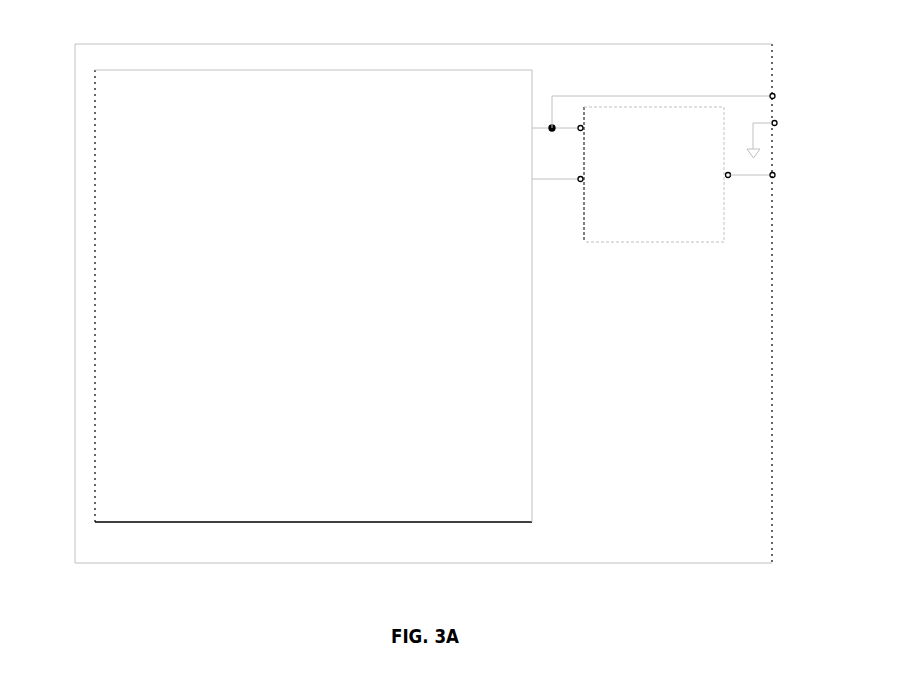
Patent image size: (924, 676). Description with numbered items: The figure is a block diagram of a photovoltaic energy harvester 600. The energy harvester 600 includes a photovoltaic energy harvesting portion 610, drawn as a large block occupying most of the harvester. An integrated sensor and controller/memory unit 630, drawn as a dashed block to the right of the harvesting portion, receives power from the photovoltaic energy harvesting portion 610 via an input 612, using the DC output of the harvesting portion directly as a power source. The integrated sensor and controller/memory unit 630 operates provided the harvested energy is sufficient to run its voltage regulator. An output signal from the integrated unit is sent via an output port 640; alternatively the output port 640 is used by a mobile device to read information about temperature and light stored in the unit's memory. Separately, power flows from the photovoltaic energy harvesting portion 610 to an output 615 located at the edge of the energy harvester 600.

The energy harvester 600 is at (550, 52).
The photovoltaic energy harvesting portion 610 is at (360, 78).
The input 612 is at (583, 130).
The output 615 is at (777, 97).
The integrated sensor and controller/memory unit 630 is at (662, 233).
The output port 640 is at (777, 175).